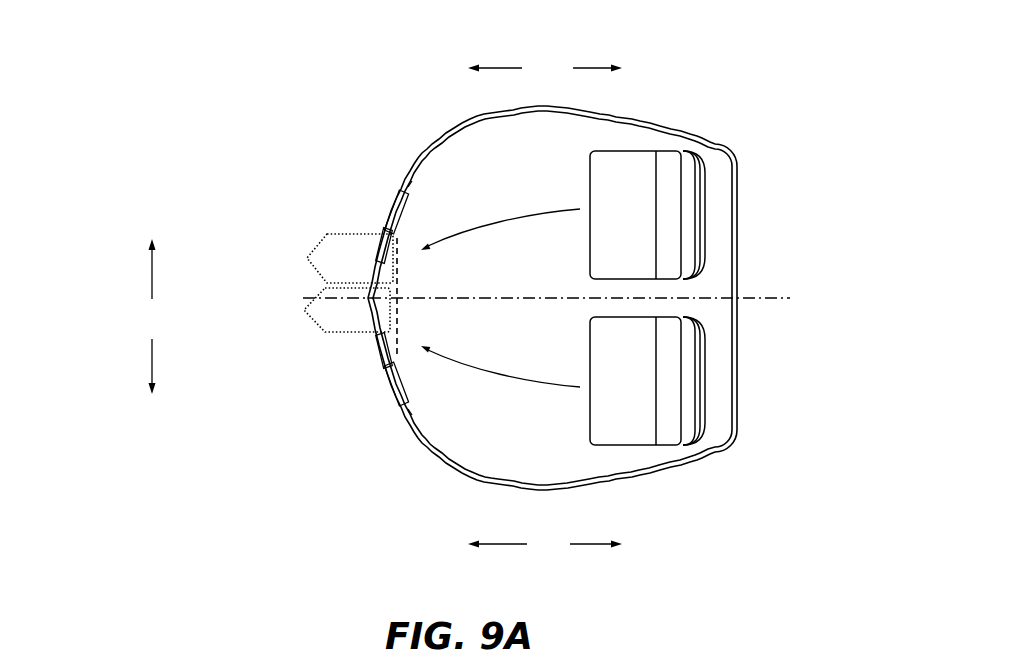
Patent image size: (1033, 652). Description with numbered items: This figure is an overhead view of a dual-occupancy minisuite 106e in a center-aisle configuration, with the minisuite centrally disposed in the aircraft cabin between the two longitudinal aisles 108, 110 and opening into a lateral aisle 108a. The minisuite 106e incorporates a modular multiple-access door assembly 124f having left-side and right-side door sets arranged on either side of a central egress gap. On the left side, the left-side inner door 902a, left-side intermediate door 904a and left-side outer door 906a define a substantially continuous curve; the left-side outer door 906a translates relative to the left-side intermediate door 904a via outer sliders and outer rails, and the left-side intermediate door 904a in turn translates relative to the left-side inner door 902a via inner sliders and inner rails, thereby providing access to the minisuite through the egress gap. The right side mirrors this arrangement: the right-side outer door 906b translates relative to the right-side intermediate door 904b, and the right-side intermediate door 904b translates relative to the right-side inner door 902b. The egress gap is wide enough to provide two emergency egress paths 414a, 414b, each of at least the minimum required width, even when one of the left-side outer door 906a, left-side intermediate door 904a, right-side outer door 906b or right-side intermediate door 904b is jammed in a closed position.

The modular multiple-access door assembly 124f is at (146, 65).
The dual-occupancy minisuite 106e is at (715, 142).
The aisle 108 is at (545, 68).
The lateral aisle 108a is at (152, 316).
The aisle 110 is at (545, 543).
The emergency egress path 414a is at (340, 263).
The emergency egress path 414b is at (343, 312).
The left-side inner door 902a is at (380, 252).
The right-side inner door 902b is at (377, 363).
The left-side intermediate door 904a is at (393, 228).
The right-side intermediate door 904b is at (393, 393).
The left-side outer door 906a is at (410, 186).
The right-side outer door 906b is at (403, 403).